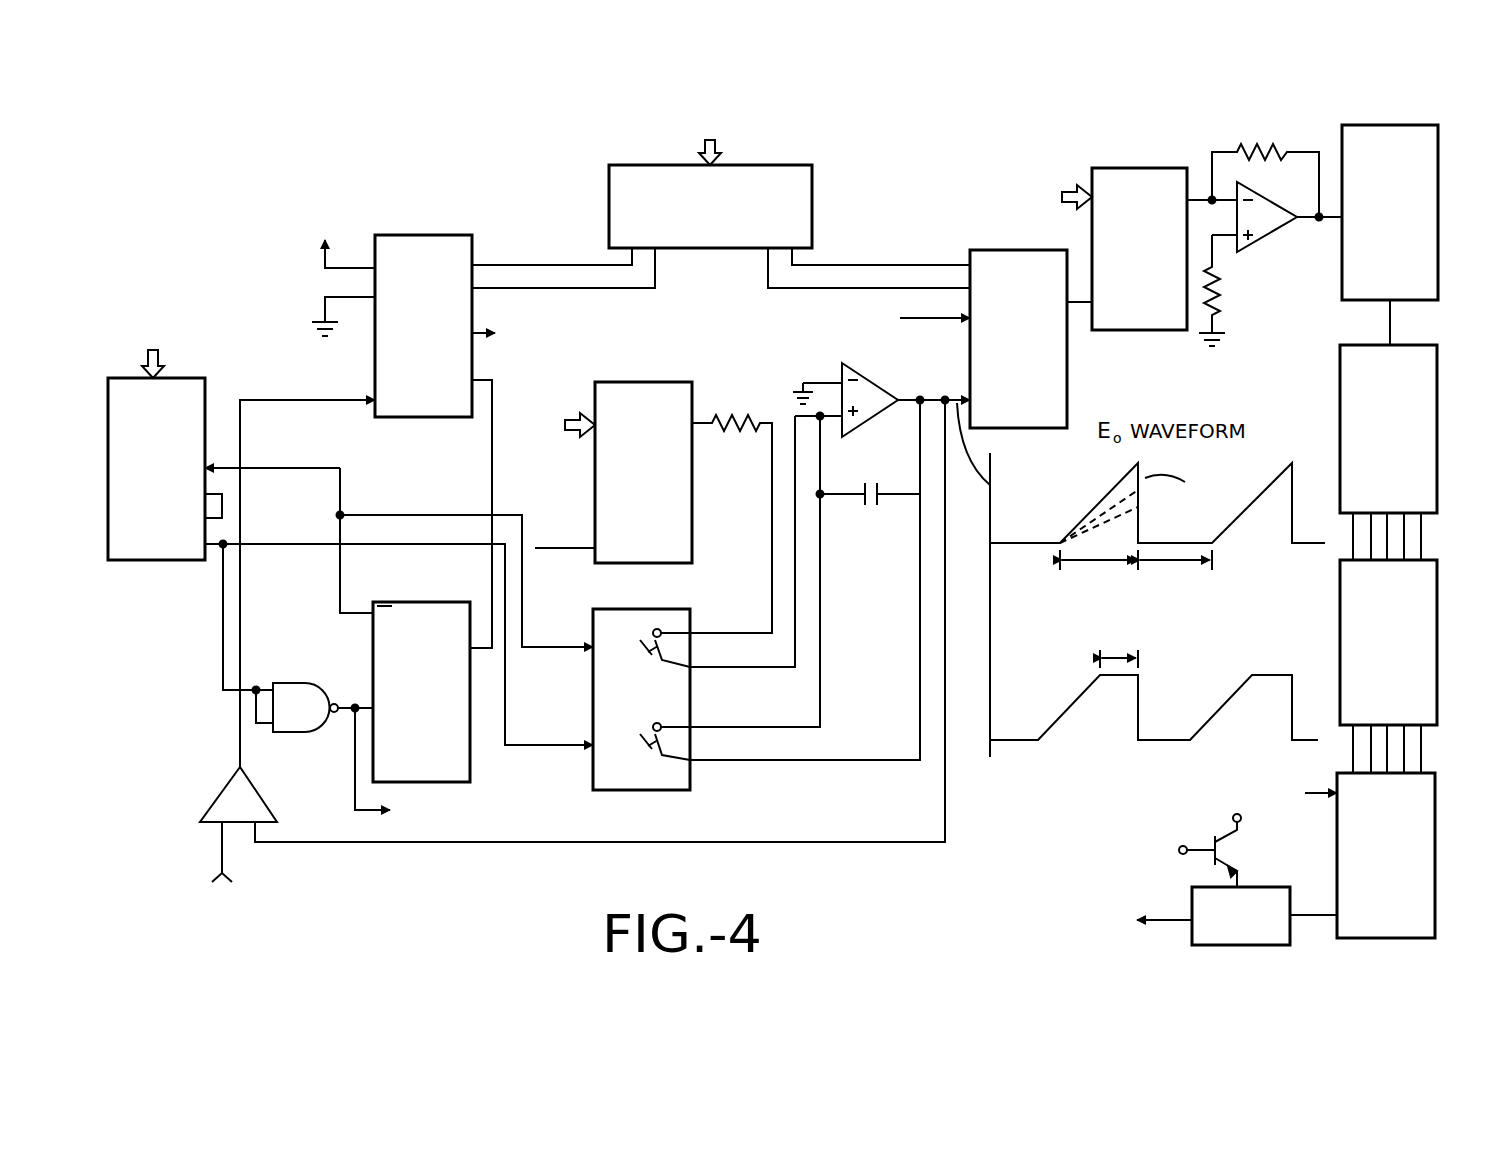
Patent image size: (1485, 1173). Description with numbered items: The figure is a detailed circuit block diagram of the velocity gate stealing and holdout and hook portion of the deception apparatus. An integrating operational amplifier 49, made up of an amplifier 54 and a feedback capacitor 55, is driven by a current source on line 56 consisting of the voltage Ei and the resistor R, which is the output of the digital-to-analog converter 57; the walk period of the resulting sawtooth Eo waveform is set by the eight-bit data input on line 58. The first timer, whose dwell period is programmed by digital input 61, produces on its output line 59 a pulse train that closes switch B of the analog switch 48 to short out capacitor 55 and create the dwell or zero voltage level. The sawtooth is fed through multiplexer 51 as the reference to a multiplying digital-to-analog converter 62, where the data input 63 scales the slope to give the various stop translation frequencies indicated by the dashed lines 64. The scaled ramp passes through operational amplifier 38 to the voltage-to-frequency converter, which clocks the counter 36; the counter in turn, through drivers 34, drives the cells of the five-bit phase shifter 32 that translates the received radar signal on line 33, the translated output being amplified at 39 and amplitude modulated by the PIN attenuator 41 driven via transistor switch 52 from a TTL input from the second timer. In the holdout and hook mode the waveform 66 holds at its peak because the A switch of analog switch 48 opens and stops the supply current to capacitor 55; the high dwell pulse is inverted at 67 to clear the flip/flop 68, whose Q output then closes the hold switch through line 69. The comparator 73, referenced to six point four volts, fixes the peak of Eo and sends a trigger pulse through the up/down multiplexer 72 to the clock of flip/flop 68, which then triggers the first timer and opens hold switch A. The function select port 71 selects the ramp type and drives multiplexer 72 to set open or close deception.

The digital input to timer #1 61 is at (165, 358).
The up/down multiplexer 72 is at (445, 235).
The function select port 71 is at (609, 205).
The operational amplifier 49 is at (775, 318).
The amplifier 54 is at (868, 415).
The feedback capacitor 55 is at (868, 508).
The digital-to-analog converter 57 is at (640, 382).
The 8-bit data input line 58 is at (576, 437).
The current source line 56 is at (770, 423).
The analog switch 48 is at (652, 609).
The output line of timer #1 59 is at (262, 543).
The flip/flop 68 is at (405, 602).
The flip flop clock line 69 is at (340, 570).
The inverter 67 is at (305, 683).
The comparator 73 is at (212, 800).
The multiplexer 51 is at (995, 250).
The multiplying digital-to-analog converter 62 is at (1125, 168).
The data input 63 is at (1067, 208).
The operational amplifier 38 is at (1258, 143).
The amplifier 39 is at (1340, 280).
The counter 36 is at (1340, 390).
The driver unit 34 is at (1340, 628).
The phase shifter 32 is at (1337, 845).
The RF IN line 33 is at (1308, 790).
The PIN attenuator 41 is at (1253, 887).
The transistor switch 52 is at (1215, 838).
The dashed lines 64 is at (1113, 500).
The holdout and hook waveform 66 is at (1075, 698).